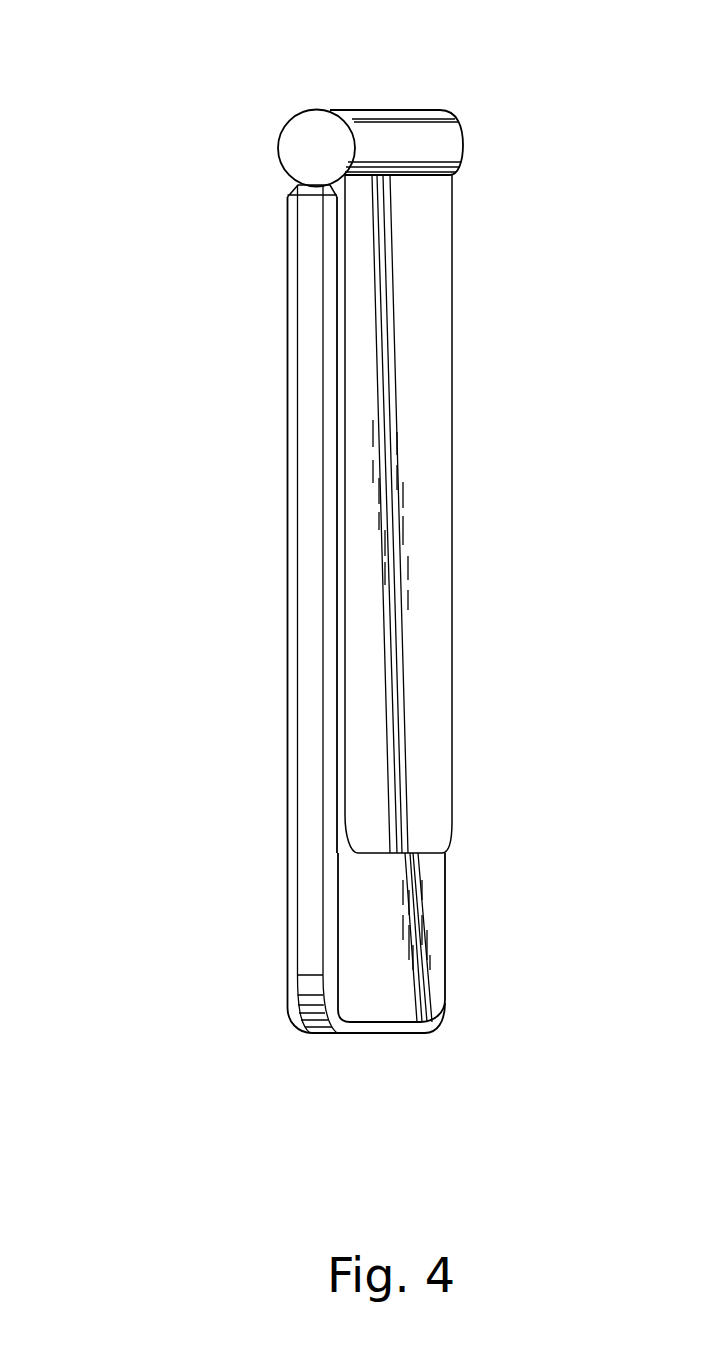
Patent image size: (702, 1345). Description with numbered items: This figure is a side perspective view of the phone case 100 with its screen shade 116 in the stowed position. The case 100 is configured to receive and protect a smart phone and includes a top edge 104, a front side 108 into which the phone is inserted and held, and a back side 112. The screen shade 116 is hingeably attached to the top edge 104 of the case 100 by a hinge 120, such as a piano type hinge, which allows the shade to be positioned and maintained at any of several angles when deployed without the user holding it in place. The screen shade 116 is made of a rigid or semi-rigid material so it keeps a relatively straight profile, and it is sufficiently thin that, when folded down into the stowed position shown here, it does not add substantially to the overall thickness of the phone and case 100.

The phone case 100 is at (142, 111).
The top edge 104 is at (352, 62).
The front side 108 is at (257, 525).
The back side 112 is at (445, 925).
The screen shade 116 is at (452, 508).
The hinge 120 is at (460, 133).